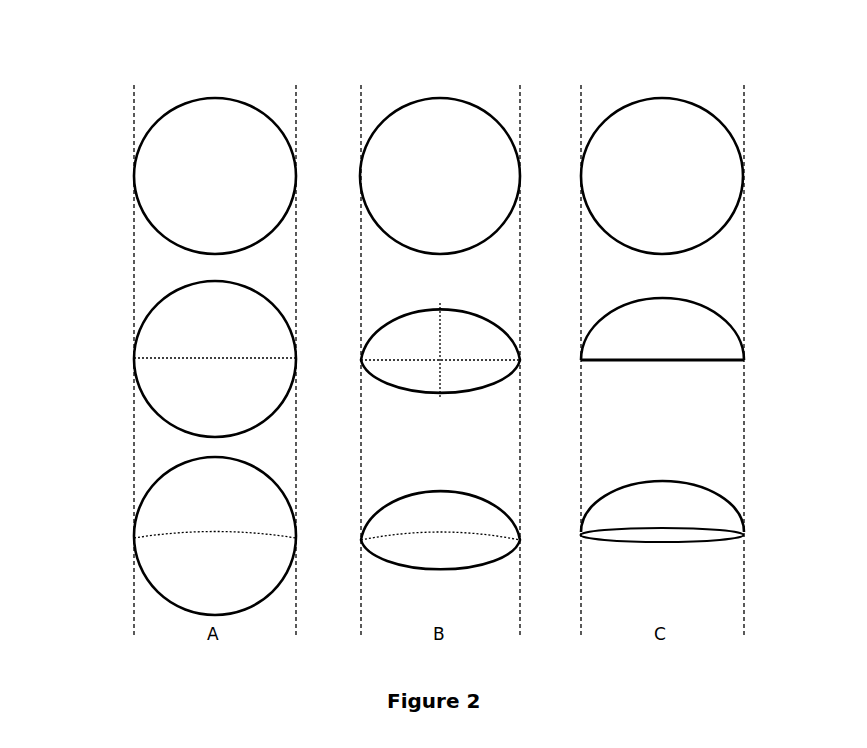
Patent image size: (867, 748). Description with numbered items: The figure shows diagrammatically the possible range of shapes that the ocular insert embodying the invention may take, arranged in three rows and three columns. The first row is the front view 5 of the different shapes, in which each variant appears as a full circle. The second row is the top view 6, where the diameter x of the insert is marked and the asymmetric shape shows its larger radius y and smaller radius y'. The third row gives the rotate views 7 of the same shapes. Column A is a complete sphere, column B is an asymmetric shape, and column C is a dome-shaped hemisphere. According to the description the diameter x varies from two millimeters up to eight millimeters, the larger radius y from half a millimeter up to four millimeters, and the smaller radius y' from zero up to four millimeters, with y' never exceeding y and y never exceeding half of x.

The front view 5 is at (409, 176).
The top view 6 is at (410, 359).
The rotate views 7 is at (410, 536).